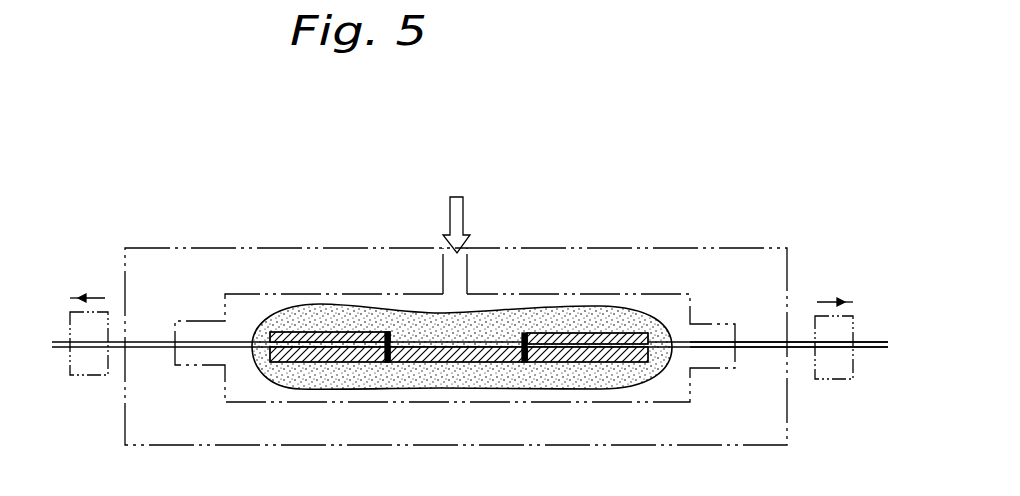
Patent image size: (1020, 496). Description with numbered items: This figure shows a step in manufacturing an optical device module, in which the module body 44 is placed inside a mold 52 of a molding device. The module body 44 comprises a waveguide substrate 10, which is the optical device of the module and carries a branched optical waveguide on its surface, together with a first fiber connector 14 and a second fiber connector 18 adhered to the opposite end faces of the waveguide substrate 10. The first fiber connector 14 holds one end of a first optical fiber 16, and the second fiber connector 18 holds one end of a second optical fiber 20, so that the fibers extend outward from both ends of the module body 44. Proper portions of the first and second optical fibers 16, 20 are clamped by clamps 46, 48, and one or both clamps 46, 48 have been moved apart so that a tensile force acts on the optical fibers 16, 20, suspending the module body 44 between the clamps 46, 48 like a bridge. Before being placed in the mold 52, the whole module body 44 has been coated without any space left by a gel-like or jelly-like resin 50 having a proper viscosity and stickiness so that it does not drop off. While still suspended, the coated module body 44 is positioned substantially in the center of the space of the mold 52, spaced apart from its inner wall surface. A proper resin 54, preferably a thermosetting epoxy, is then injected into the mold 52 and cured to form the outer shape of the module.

The waveguide substrate 10 is at (480, 362).
The first fiber connector 14 is at (333, 363).
The first optical fiber 16 is at (152, 340).
The second fiber connector 18 is at (595, 363).
The second optical fiber 20 is at (755, 342).
The module body 44 is at (497, 333).
The clamp 46 is at (79, 376).
The clamp 48 is at (823, 380).
The gel-like resin 50 is at (413, 308).
The mold 52 is at (270, 248).
The resin 54 is at (458, 204).